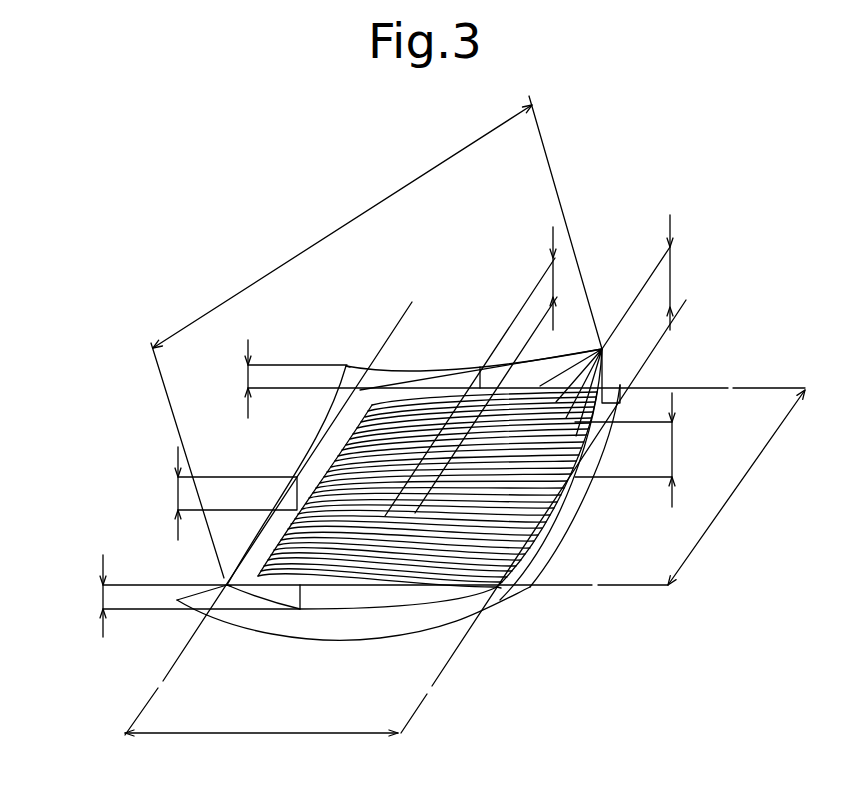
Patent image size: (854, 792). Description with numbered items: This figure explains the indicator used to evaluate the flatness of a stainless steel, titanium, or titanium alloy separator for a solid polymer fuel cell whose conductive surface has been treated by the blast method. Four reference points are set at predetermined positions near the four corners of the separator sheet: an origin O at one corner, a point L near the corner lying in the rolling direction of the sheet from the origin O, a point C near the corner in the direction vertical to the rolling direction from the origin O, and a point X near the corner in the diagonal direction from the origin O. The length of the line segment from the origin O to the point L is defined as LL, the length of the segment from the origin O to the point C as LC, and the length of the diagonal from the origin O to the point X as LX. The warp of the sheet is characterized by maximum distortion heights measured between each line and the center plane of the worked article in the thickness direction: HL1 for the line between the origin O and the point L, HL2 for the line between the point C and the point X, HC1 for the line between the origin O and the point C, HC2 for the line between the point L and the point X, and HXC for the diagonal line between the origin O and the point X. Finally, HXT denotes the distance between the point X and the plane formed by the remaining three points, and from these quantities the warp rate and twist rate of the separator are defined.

The length of OX LX is at (376, 337).
The maximum distortion height of line OX HXC is at (553, 289).
The distance between point X and the plane formed by points C, L and O HXT is at (698, 272).
The maximum distortion height of line CX HL2 is at (268, 379).
The maximum distortion height of line OC HC1 is at (205, 493).
The maximum distortion height of line OL HL1 is at (74, 596).
The maximum distortion height of line LX HC2 is at (625, 450).
The length of OC line segment LC is at (736, 487).
The length of OL line segment LL is at (261, 719).
The point X is at (602, 319).
The point C is at (351, 350).
The origin O is at (222, 619).
The point L is at (506, 614).